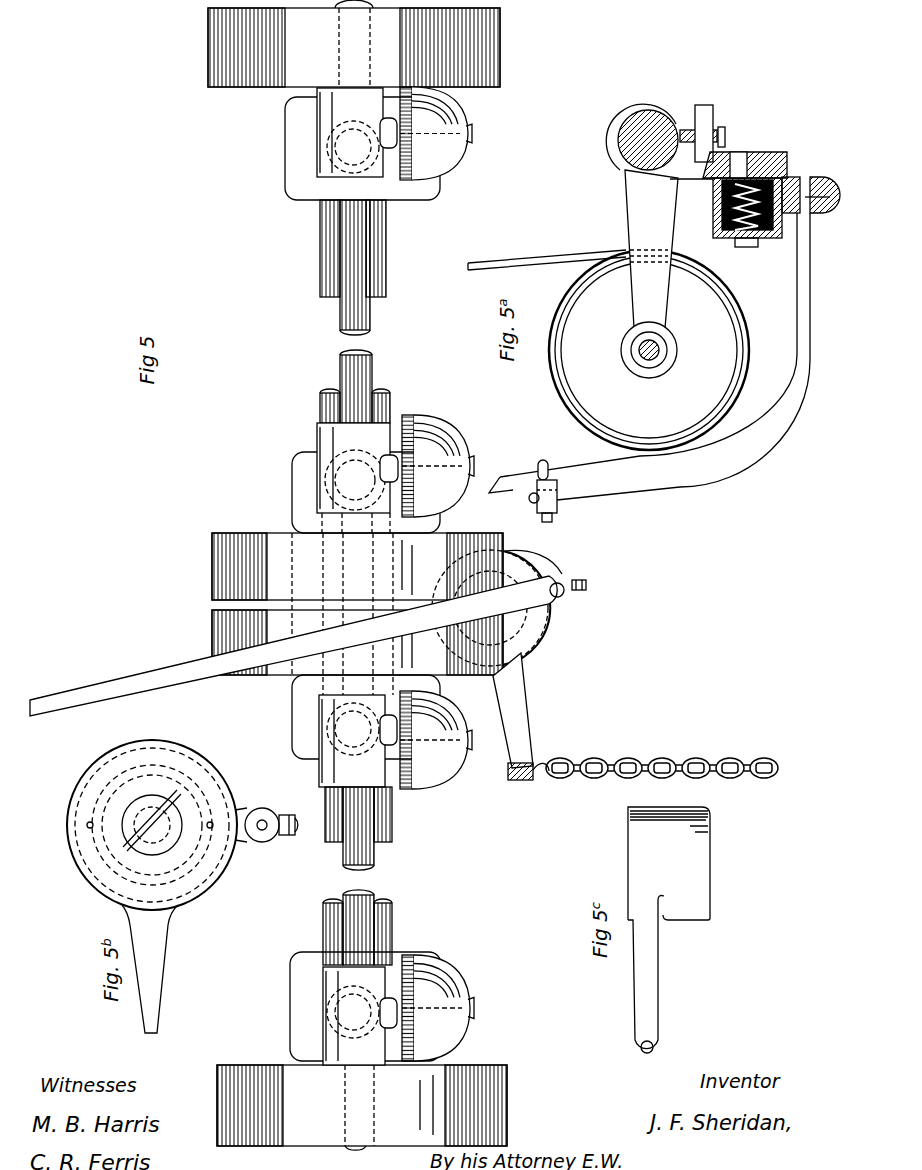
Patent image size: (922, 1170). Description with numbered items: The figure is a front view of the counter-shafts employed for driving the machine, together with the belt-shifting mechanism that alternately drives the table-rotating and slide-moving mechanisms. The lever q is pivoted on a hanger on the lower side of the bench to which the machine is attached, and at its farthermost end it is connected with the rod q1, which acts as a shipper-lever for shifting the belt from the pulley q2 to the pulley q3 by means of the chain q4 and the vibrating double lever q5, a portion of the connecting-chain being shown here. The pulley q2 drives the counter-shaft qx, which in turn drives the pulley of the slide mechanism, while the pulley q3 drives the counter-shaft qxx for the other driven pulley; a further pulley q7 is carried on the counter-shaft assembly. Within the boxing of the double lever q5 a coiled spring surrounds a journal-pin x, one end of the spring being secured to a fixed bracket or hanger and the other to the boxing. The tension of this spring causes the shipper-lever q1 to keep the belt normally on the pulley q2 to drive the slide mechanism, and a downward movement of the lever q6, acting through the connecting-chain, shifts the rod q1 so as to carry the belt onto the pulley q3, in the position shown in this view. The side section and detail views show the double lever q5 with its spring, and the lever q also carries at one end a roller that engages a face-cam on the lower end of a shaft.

In FIG. 5, the lever q is at (112, 694).
In FIG. 5A, the rod q1 is at (664, 353).
In FIG. 5, the pulley q2 is at (211, 556).
In FIG. 5, the pulley q3 is at (211, 632).
In FIG. 5A, the pulley q3 is at (649, 350).
In FIG. 5, the chain q4 is at (655, 748).
In FIG. 5B, the vibrating double lever q5 is at (155, 969).
In FIG. 5C, the vibrating double lever q5 is at (657, 975).
In FIG. 5, the lever q6 is at (566, 660).
In FIG. 5, the top wheel q7 is at (372, 43).
In FIG. 5, the counter-shaft qx is at (341, 362).
In FIG. 5A, the counter-shaft qx is at (657, 360).
In FIG. 5, the counter-shaft qxx is at (352, 905).
In FIG. 5A, the journal-pin x is at (743, 178).
In FIG. 5B, the journal-pin x is at (152, 815).